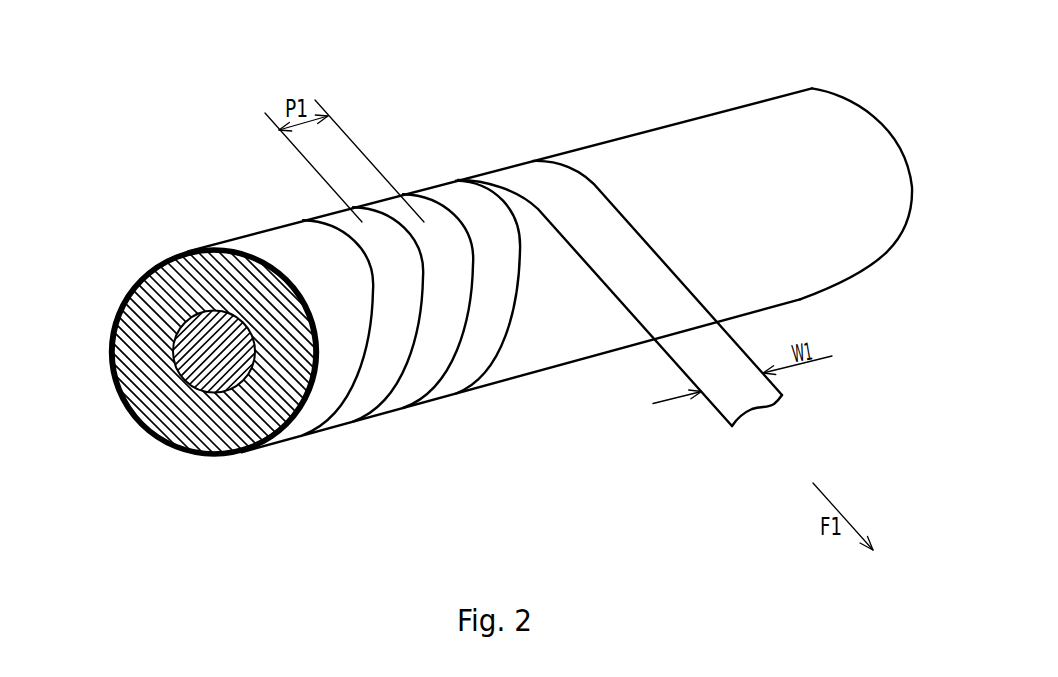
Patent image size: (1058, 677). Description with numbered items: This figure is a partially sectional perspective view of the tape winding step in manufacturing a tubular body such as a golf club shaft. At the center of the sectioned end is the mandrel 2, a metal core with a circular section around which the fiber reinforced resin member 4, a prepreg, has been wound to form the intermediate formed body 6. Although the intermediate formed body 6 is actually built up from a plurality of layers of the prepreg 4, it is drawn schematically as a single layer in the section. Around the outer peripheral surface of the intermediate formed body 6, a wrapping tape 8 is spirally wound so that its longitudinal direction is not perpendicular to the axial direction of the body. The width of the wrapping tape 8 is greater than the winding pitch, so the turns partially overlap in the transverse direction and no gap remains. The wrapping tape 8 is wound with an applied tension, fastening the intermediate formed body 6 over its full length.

The mandrel 2 is at (213, 370).
The fiber reinforced resin member 4 is at (471, 278).
The intermediate formed body 6 is at (680, 167).
The wrapping tape 8 is at (118, 392).